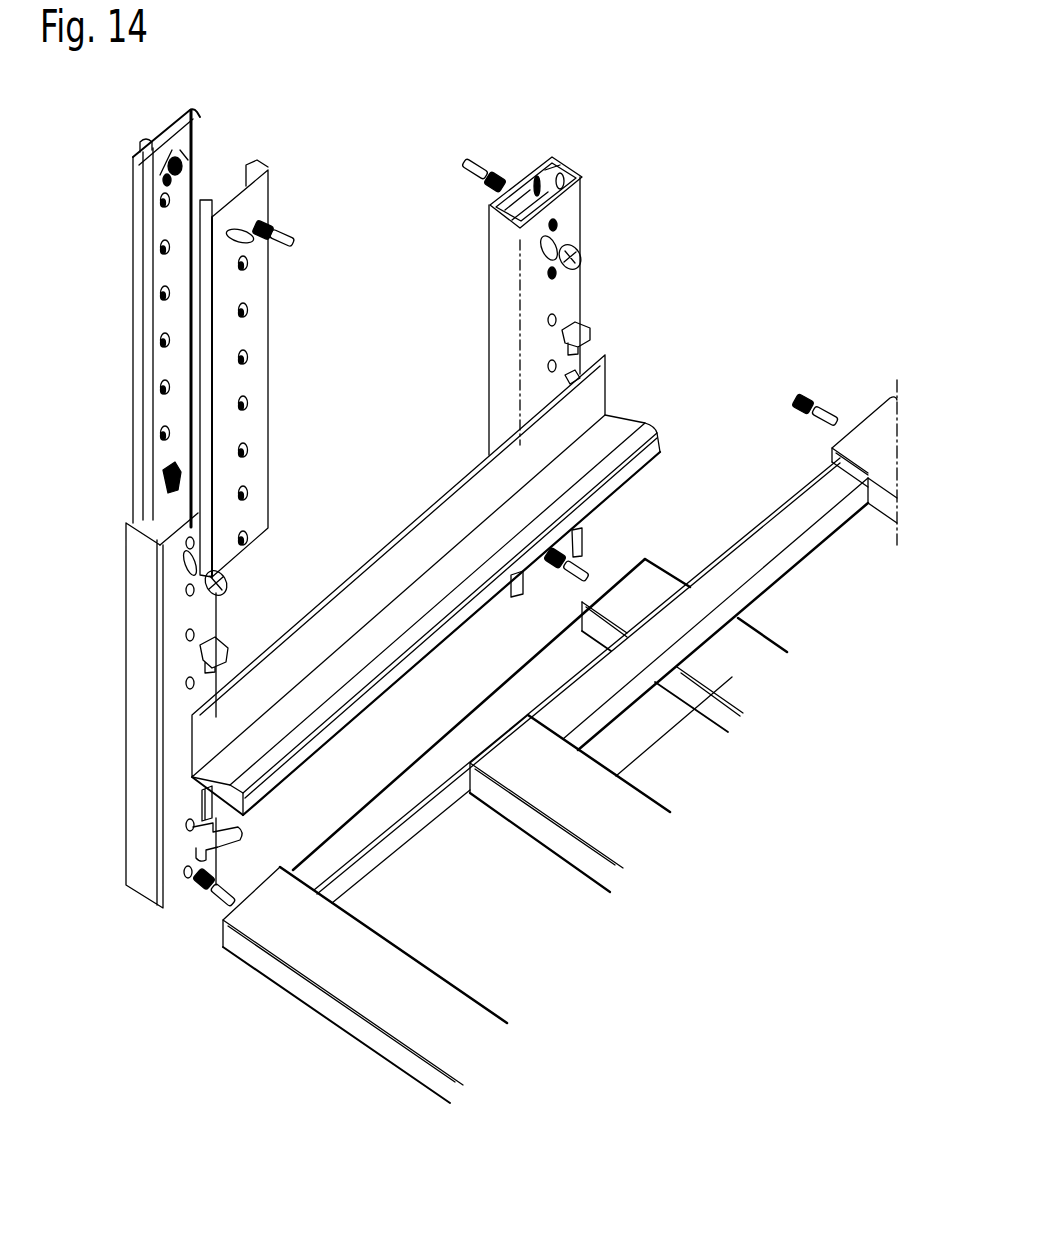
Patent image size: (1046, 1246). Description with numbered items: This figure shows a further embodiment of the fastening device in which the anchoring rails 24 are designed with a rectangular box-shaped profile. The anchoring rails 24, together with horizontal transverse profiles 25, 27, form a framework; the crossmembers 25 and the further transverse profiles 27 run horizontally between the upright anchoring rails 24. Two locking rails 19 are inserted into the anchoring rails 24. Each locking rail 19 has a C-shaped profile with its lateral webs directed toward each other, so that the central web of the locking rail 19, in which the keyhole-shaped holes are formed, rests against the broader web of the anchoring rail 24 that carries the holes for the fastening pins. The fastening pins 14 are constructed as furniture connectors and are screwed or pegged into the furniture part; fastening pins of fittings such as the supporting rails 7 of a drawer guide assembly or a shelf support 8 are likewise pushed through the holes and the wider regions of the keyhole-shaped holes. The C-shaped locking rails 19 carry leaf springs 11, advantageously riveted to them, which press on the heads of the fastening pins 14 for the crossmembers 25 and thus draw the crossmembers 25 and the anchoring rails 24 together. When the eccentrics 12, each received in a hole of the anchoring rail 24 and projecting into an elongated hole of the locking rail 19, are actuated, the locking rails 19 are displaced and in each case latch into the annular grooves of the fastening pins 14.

The supporting rail 7 is at (588, 393).
The shelf support 8 is at (585, 325).
The leaf spring 11 is at (232, 188).
The eccentric 12 is at (580, 250).
The fastening pin 14 is at (458, 165).
The locking rail 19 is at (172, 133).
The anchoring rail 24 is at (575, 198).
The crossmember 25 is at (868, 433).
The horizontal transverse profile 27 is at (792, 520).